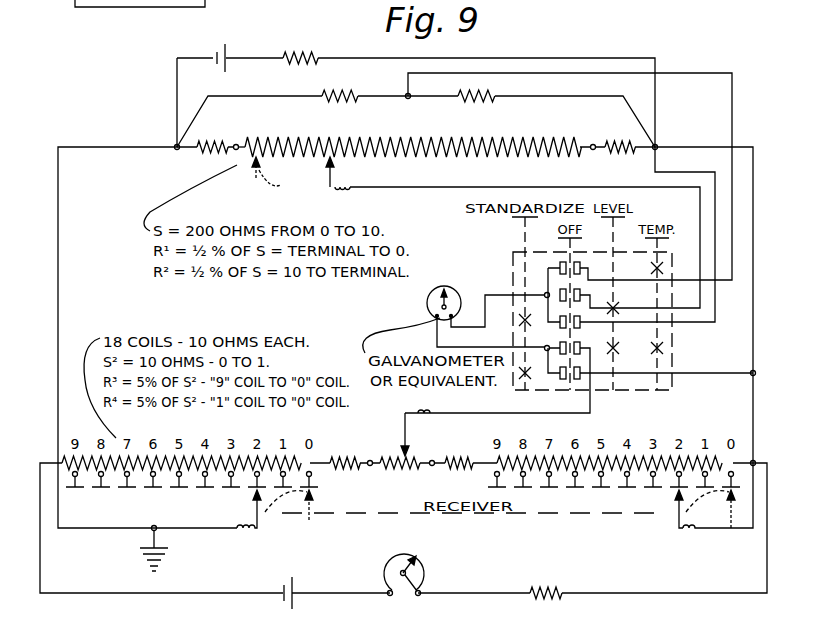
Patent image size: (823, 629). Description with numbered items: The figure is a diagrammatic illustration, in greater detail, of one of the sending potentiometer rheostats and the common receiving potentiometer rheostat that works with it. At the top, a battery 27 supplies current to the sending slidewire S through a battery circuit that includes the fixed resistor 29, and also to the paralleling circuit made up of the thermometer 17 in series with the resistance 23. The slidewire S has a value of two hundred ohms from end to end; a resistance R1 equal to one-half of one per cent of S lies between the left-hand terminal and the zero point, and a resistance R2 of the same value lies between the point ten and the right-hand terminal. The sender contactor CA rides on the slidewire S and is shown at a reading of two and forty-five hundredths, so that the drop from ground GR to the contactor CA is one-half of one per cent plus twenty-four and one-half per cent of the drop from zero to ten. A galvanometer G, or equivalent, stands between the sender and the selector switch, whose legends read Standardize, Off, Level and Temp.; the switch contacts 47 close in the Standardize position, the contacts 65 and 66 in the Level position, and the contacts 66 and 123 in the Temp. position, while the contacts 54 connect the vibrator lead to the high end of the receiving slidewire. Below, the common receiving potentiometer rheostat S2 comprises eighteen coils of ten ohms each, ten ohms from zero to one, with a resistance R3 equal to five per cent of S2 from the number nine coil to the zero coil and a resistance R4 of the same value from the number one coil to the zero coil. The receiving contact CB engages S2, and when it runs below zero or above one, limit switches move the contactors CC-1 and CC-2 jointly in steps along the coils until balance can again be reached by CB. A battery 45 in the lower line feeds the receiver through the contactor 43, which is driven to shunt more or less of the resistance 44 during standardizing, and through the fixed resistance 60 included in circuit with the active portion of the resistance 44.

The battery 27 is at (213, 64).
The fixed resistor 29 is at (292, 65).
The thermometer 17 is at (348, 91).
The resistance 23 is at (484, 94).
The contacts 65 is at (552, 266).
The contacts 123 is at (584, 263).
The contacts 47 is at (568, 334).
The contacts 66 is at (583, 341).
The contacts 54 is at (574, 383).
The resistance 44 is at (385, 572).
The contactor 43 is at (427, 571).
The battery 45 is at (296, 586).
The fixed resistance 60 is at (546, 581).
The resistance R1 is at (211, 134).
The resistance R2 is at (617, 134).
The sending potentiometer rheostat slidewire S is at (420, 160).
The sender contactor CA is at (327, 176).
The galvanometer G is at (486, 305).
The contact CB is at (402, 445).
The common receiving potentiometer rheostat S2 is at (401, 478).
The resistance R3 is at (341, 450).
The resistance R4 is at (464, 450).
The ground GR is at (137, 549).
The contactor CC-1 is at (262, 497).
The contactor CC-2 is at (684, 497).